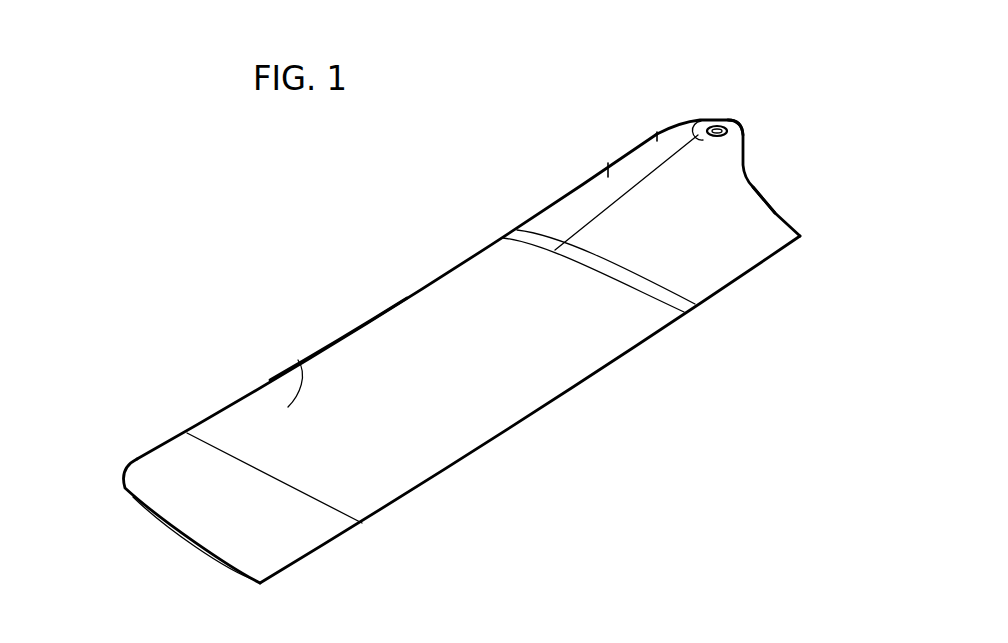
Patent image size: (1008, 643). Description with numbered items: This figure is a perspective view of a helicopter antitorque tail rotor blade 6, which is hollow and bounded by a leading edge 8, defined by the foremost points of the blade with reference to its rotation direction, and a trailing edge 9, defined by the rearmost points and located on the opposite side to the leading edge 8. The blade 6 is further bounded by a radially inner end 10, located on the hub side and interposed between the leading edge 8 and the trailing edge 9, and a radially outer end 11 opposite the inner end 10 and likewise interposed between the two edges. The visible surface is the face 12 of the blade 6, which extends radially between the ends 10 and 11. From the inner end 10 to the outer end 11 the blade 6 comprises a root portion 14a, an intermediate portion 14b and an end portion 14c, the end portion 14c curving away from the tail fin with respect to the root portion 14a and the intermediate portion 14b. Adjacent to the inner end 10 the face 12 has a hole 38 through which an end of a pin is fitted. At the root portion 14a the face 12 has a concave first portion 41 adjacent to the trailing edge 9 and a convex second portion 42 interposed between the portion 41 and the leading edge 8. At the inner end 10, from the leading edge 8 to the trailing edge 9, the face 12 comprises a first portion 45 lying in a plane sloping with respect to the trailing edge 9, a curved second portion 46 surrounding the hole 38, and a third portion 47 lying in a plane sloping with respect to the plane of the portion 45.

The blade 6 is at (443, 204).
The leading edge 8 is at (322, 337).
The trailing edge 9 is at (473, 473).
The radially inner end 10 is at (775, 137).
The radially outer end 11 is at (137, 573).
The face 12 is at (423, 337).
The root portion 14a is at (608, 165).
The intermediate portion 14b is at (298, 360).
The end portion 14c is at (148, 472).
The hole 38 is at (703, 142).
The concave first portion 41 is at (743, 253).
The convex second portion 42 is at (657, 132).
The first portion 45 is at (702, 119).
The curved second portion 46 is at (738, 121).
The third portion 47 is at (781, 213).